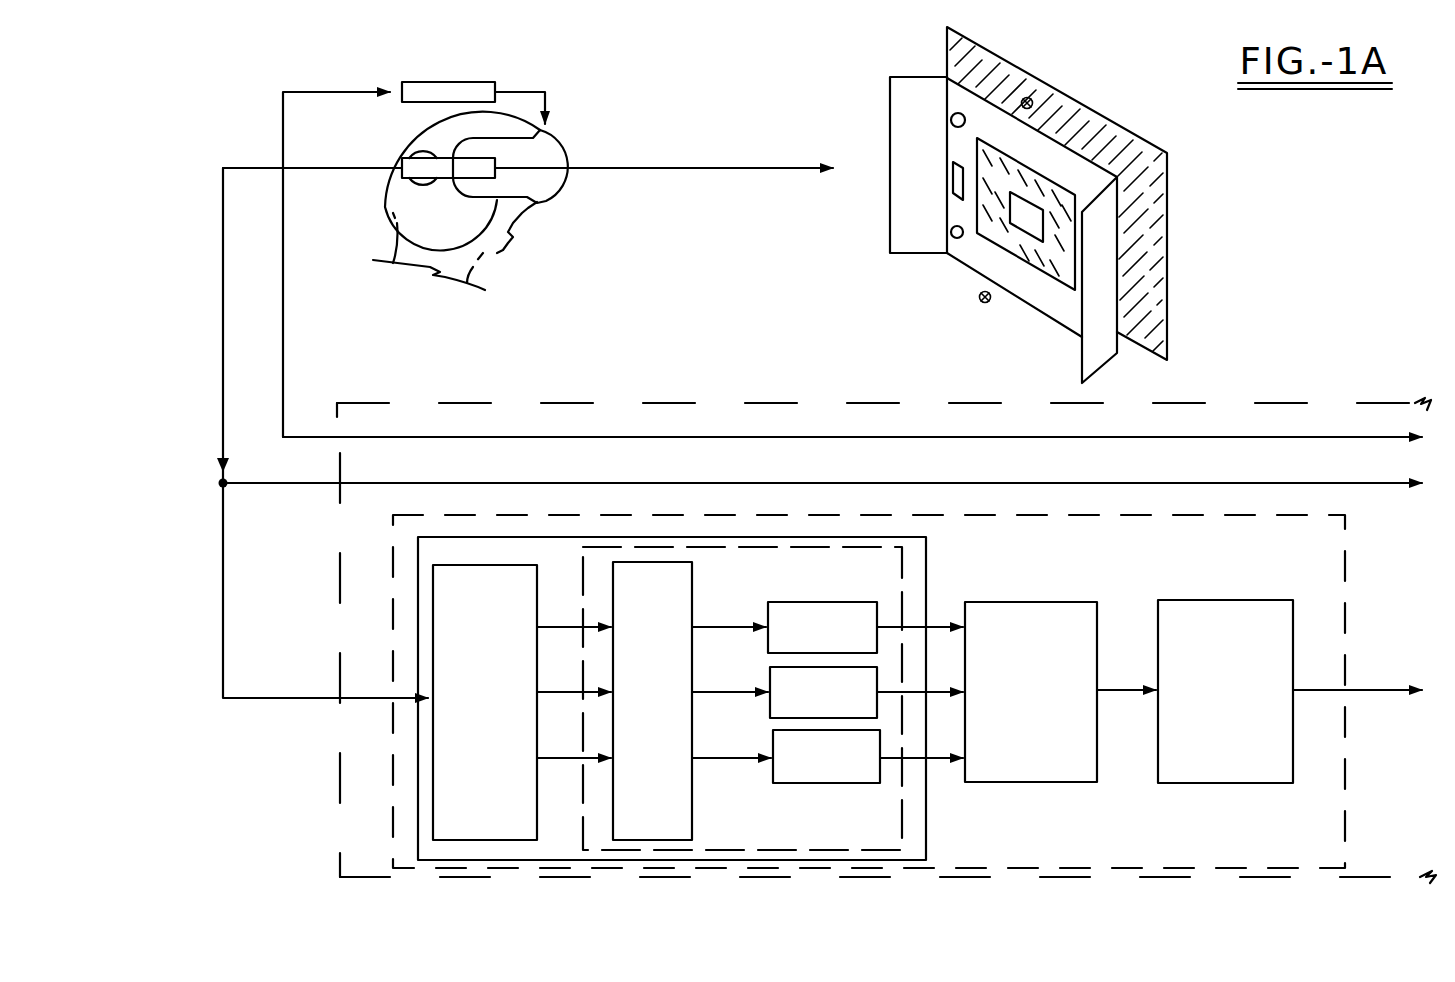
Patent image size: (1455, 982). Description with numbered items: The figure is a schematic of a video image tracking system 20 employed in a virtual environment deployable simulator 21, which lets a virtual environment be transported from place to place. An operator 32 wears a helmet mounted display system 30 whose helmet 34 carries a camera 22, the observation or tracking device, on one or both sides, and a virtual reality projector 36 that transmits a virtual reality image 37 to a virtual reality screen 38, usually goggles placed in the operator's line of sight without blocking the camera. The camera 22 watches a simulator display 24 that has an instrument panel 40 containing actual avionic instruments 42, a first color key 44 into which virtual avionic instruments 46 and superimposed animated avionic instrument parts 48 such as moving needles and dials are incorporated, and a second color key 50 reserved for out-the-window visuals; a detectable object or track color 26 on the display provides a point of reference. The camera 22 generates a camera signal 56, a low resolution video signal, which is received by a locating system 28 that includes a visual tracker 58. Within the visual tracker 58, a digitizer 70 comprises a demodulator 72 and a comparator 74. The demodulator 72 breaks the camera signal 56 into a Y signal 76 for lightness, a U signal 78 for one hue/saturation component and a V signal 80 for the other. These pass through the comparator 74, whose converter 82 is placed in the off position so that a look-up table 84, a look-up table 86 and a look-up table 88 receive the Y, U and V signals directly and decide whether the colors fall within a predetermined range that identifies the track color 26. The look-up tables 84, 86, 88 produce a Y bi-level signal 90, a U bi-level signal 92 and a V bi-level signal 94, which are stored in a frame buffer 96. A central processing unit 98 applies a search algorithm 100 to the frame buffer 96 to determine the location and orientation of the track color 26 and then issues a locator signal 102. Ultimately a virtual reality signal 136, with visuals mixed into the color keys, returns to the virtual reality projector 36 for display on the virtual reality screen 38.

The video image tracking system 20 is at (528, 164).
The virtual environment deployable simulator 21 is at (1071, 205).
The camera 22 is at (410, 160).
The simulator display 24 is at (953, 230).
The track color 26 is at (1033, 101).
The locating system 28 is at (478, 398).
The helmet mounted display system 30 is at (480, 249).
The operator 32 is at (397, 240).
The helmet 34 is at (367, 195).
The virtual reality projector 36 is at (412, 75).
The virtual reality image 37 is at (548, 99).
The virtual reality screen 38 is at (561, 148).
The instrument panel 40 is at (1058, 318).
The actual avionic instruments 42 is at (949, 232).
The first color key 44 is at (960, 238).
The virtual avionic instruments 46 is at (1013, 224).
The animated avionic instrument parts 48 is at (1034, 210).
The second color key 50 is at (1168, 172).
The camera signal 56 is at (223, 397).
The visual tracker 58 is at (839, 691).
The digitizer 70 is at (655, 691).
The demodulator 72 is at (433, 750).
The comparator 74 is at (764, 698).
The Y signal 76 is at (577, 621).
The U signal 78 is at (577, 690).
The V signal 80 is at (573, 761).
The converter 82 is at (692, 830).
The look-up table 84 is at (733, 627).
The look-up table 86 is at (733, 692).
The look-up table 88 is at (746, 760).
The Y bi-level signal 90 is at (880, 627).
The U bi-level signal 92 is at (913, 692).
The V bi-level signal 94 is at (943, 758).
The frame buffer 96 is at (1033, 782).
The central processing unit 98 is at (1205, 783).
The search algorithm 100 is at (1133, 690).
The locator signal 102 is at (1362, 690).
The virtual reality signal 136 is at (627, 437).